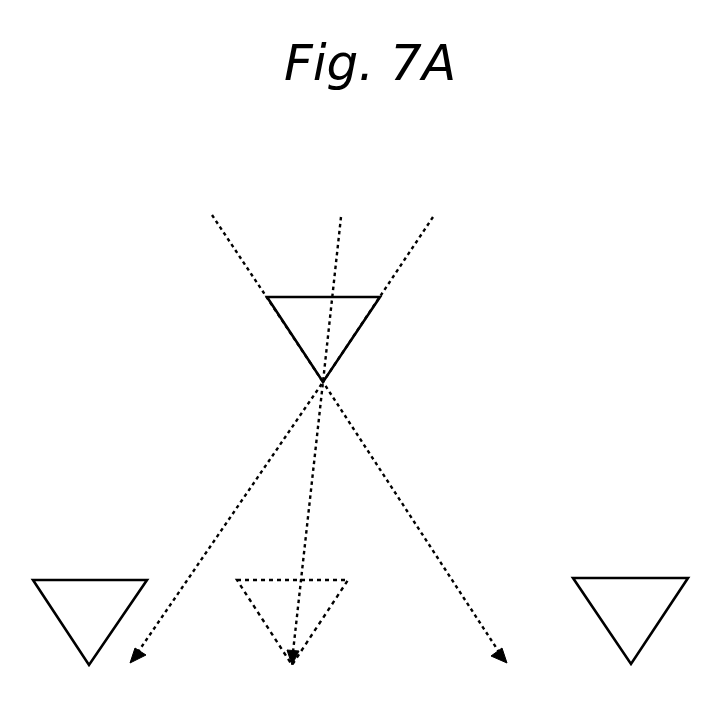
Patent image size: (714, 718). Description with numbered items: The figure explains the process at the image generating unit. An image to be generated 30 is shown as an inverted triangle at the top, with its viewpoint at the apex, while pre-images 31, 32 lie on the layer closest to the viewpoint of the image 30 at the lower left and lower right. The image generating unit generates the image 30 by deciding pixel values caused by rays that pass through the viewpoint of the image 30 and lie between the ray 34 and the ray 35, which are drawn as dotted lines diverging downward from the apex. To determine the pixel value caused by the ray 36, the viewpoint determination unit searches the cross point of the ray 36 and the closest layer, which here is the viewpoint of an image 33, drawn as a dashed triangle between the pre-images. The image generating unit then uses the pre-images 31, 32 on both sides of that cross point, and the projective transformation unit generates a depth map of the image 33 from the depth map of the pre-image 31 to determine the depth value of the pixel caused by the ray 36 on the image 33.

The image to be generated 30 is at (297, 295).
The pre-image 31 is at (89, 578).
The pre-image 32 is at (630, 576).
The image 33 is at (266, 578).
The ray 34 is at (225, 228).
The ray 35 is at (427, 228).
The ray 36 is at (337, 222).